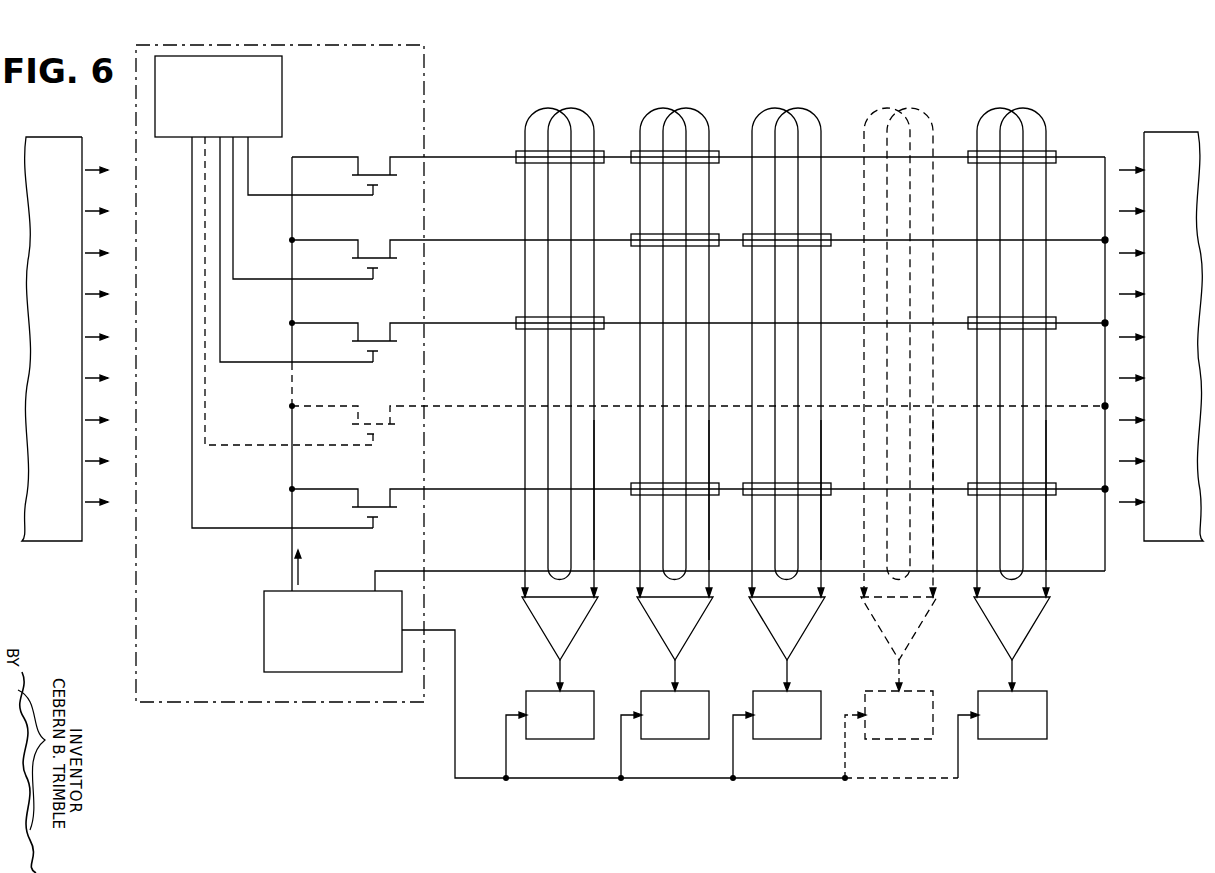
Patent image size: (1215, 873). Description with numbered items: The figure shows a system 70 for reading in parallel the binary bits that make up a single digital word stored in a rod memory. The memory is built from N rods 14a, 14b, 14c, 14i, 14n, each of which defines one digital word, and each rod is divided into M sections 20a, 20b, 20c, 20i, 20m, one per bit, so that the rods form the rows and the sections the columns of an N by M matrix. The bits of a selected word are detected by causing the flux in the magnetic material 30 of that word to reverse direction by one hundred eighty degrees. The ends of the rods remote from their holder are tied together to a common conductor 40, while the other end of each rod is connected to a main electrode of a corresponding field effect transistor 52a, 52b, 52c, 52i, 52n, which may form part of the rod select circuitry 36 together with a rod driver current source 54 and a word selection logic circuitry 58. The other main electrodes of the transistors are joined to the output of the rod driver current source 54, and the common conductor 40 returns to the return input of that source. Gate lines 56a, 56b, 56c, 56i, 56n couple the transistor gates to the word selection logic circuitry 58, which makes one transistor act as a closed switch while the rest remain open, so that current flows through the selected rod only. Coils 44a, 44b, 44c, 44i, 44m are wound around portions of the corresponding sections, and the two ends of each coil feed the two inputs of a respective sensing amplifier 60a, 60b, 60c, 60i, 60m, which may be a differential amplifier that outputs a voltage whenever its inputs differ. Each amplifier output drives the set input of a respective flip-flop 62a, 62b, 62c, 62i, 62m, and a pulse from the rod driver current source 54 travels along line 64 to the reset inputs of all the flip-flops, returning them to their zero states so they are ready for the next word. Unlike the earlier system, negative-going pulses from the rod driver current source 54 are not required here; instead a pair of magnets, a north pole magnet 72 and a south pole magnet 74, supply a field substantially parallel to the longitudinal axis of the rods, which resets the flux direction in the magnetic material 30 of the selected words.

The north pole magnet 72 is at (62, 137).
The south pole magnet 74 is at (1160, 132).
The word selection logic circuitry 58 is at (282, 100).
The rod select circuitry 36 is at (424, 97).
The system 70 is at (506, 111).
The section 20a is at (572, 107).
The section 20b is at (687, 107).
The section 20c is at (799, 107).
The section 20i is at (904, 107).
The section 20m is at (1026, 107).
The magnetic material 30 is at (599, 163).
The field effect transistor 52a is at (372, 168).
The field effect transistor 52b is at (372, 251).
The field effect transistor 52c is at (372, 334).
The field effect transistor 52i is at (372, 417).
The field effect transistor 52n is at (372, 500).
The line 56a is at (248, 174).
The line 56b is at (233, 272).
The line 56c is at (220, 352).
The line 56i is at (205, 425).
The line 56n is at (192, 506).
The rod 14a is at (1083, 157).
The rod 14b is at (1083, 240).
The rod 14c is at (1083, 323).
The rod 14i is at (1079, 406).
The rod 14n is at (1083, 489).
The coil 44a is at (594, 462).
The coil 44b is at (709, 462).
The coil 44c is at (821, 462).
The coil 44i is at (933, 462).
The coil 44m is at (1046, 462).
The common conductor 40 is at (475, 571).
The rod driver current source 54 is at (264, 618).
The line 64 is at (455, 660).
The sensing amplifier 60a is at (572, 640).
The sensing amplifier 60b is at (687, 640).
The sensing amplifier 60c is at (799, 640).
The sensing amplifier 60i is at (911, 640).
The sensing amplifier 60m is at (1024, 640).
The flip-flop 62a is at (570, 739).
The flip-flop 62b is at (685, 739).
The flip-flop 62c is at (797, 739).
The flip-flop 62i is at (909, 739).
The flip-flop 62m is at (1022, 739).